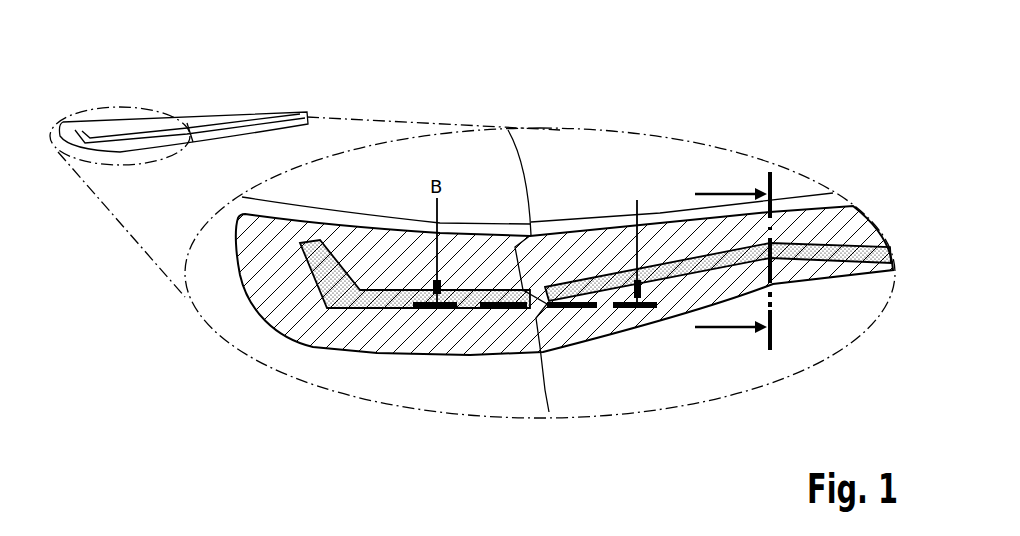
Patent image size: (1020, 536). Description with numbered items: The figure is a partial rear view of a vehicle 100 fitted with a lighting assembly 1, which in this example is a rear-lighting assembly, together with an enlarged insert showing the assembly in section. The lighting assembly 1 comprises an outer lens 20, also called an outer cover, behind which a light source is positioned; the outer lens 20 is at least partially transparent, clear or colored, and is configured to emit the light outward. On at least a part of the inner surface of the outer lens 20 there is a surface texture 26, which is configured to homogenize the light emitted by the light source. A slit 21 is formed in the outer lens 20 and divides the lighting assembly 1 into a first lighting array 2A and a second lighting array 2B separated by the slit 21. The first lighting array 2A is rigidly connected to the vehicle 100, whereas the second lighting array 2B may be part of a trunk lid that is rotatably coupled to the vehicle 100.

The vehicle 100 is at (338, 100).
The lighting assembly 1 is at (767, 152).
The first lighting array 2A is at (307, 402).
The second lighting array 2B is at (678, 420).
The outer lens 20 is at (453, 333).
The slit 21 is at (547, 392).
The surface texture 26 is at (375, 310).